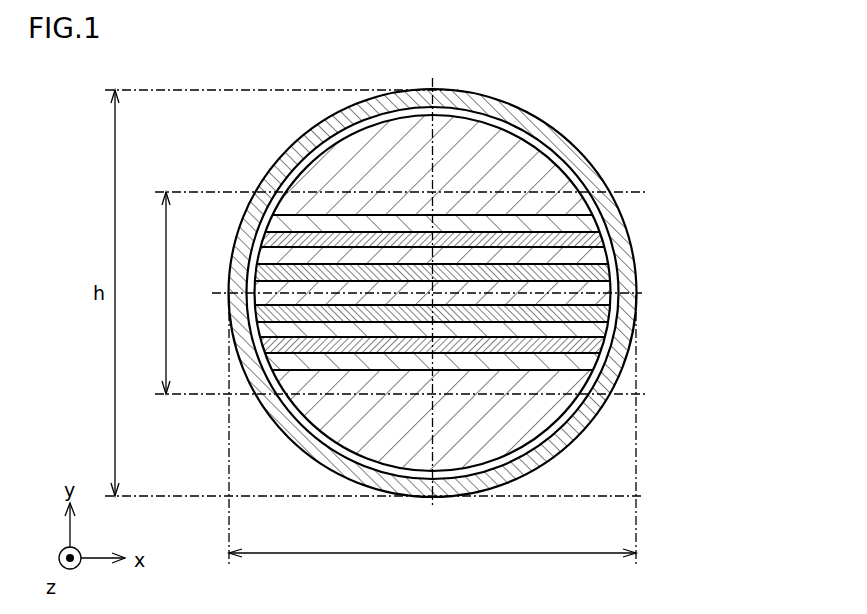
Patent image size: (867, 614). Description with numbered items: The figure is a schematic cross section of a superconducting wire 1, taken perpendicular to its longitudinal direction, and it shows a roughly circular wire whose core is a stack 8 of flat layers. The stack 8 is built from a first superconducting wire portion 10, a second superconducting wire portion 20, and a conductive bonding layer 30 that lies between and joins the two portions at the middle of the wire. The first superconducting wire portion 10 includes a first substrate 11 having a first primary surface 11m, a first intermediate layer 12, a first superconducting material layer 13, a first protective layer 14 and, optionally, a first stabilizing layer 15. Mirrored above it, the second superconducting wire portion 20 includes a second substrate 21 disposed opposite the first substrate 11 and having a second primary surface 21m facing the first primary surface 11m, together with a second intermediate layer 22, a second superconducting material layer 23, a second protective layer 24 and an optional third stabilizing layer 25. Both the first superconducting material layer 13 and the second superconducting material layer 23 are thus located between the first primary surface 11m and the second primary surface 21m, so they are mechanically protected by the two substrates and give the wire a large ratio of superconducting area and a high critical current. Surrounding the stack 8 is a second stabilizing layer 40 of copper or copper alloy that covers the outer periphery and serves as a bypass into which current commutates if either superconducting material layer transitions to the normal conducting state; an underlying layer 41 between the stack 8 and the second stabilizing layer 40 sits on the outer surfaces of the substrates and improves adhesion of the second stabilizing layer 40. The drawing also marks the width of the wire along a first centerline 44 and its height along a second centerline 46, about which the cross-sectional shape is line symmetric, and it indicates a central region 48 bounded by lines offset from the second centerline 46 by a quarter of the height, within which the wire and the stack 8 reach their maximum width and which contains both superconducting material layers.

The superconducting wire 1 is at (608, 77).
The stack 8 is at (511, 286).
The first superconducting wire portion 10 is at (493, 397).
The first substrate 11 is at (545, 385).
The first primary surface 11m is at (518, 373).
The first intermediate layer 12 is at (540, 362).
The first superconducting material layer 13 is at (545, 345).
The first protective layer 14 is at (550, 330).
The first stabilizing layer 15 is at (560, 313).
The second superconducting wire portion 20 is at (493, 181).
The second substrate 21 is at (510, 205).
The second primary surface 21m is at (483, 210).
The second intermediate layer 22 is at (523, 222).
The second superconducting material layer 23 is at (560, 244).
The second protective layer 24 is at (543, 258).
The third stabilizing layer 25 is at (471, 256).
The conductive bonding layer 30 is at (586, 290).
The second stabilizing layer 40 is at (466, 100).
The underlying layer 41 is at (485, 113).
The first centerline 44 is at (432, 441).
The second centerline 46 is at (414, 293).
The central region 48 is at (390, 293).